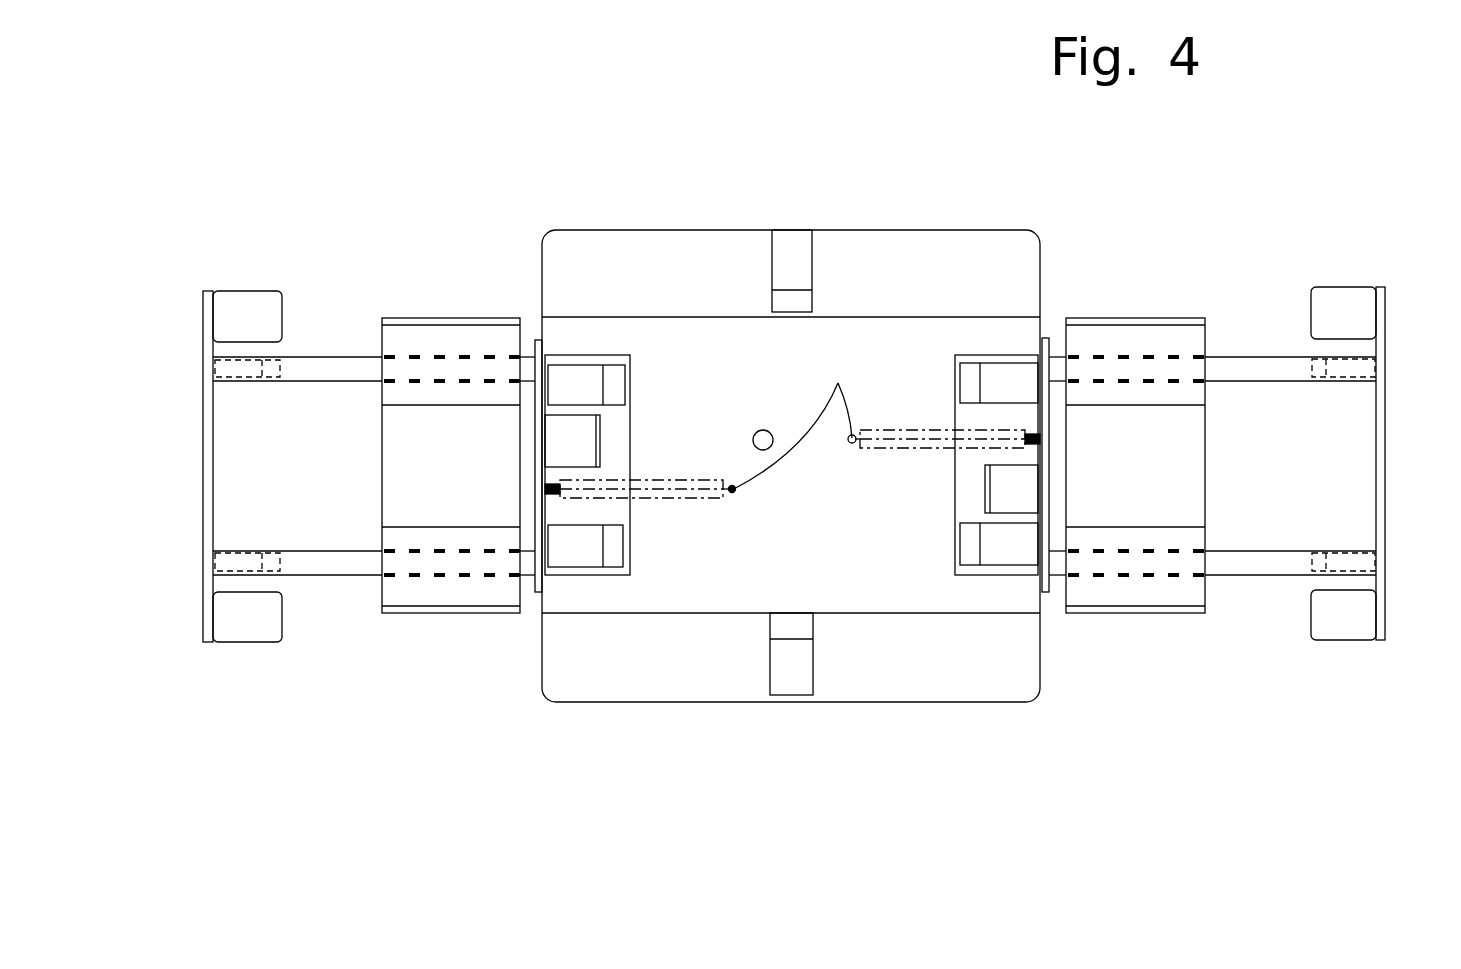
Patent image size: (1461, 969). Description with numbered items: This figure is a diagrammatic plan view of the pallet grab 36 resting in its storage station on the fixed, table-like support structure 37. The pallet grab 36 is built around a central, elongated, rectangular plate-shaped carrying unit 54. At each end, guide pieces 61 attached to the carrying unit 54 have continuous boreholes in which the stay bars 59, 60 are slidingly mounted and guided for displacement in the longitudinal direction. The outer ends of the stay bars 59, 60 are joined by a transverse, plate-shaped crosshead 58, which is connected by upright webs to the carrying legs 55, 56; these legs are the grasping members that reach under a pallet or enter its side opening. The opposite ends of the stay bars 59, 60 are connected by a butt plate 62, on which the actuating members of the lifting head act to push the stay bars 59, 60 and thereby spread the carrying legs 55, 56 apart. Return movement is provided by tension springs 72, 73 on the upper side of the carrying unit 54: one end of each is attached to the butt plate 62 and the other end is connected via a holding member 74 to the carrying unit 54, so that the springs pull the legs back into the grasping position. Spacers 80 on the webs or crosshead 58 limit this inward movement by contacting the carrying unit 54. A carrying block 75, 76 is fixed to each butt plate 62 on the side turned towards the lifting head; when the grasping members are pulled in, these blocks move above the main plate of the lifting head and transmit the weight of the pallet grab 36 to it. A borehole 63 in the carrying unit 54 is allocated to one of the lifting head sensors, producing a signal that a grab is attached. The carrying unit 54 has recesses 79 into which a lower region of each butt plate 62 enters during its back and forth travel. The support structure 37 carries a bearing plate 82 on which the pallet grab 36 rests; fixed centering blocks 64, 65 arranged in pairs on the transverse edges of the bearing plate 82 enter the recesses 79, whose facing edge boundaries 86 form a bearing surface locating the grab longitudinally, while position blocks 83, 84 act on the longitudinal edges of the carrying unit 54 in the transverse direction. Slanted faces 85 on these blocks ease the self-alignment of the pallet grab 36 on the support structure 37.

The pallet grab 36 is at (1173, 215).
The support structure 37 is at (943, 215).
The carrying unit 54 is at (962, 615).
The carrying leg 55 is at (240, 307).
The carrying leg 56 is at (245, 627).
The crosshead 58 is at (208, 413).
The stay bar 59 is at (306, 357).
The stay bar 60 is at (322, 578).
The guide piece 61 is at (393, 333).
The butt plate 62 is at (530, 320).
The borehole 63 is at (762, 430).
The centering block 64 is at (573, 380).
The centering block 65 is at (587, 550).
The tension spring 72 is at (702, 498).
The tension spring 73 is at (895, 427).
The holding member 74 is at (838, 383).
The carrying block 75 is at (555, 440).
The carrying block 76 is at (1027, 493).
The recess 79 is at (1049, 409).
The spacer 80 is at (282, 381).
The bearing plate 82 is at (895, 247).
The position block 83 is at (790, 257).
The position block 84 is at (795, 680).
The slanted face 85 is at (783, 300).
The edge boundary 86 is at (637, 417).